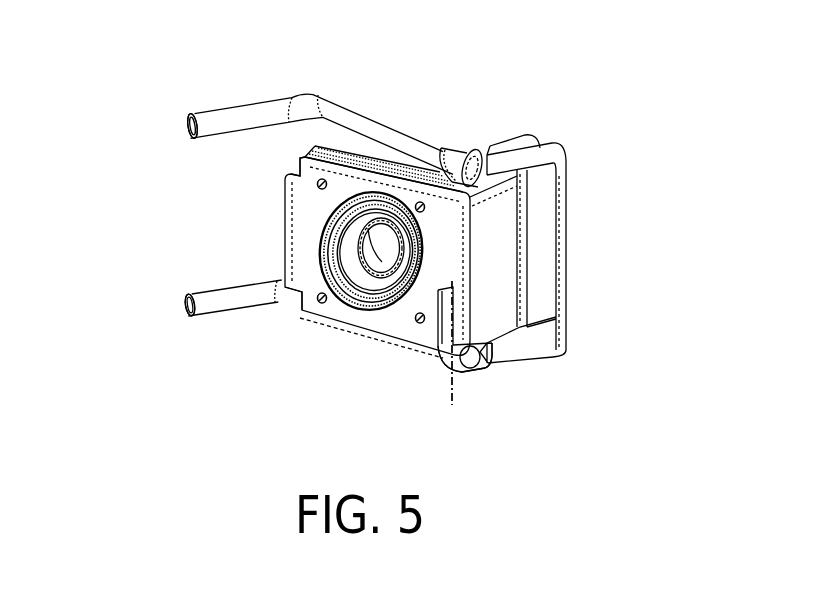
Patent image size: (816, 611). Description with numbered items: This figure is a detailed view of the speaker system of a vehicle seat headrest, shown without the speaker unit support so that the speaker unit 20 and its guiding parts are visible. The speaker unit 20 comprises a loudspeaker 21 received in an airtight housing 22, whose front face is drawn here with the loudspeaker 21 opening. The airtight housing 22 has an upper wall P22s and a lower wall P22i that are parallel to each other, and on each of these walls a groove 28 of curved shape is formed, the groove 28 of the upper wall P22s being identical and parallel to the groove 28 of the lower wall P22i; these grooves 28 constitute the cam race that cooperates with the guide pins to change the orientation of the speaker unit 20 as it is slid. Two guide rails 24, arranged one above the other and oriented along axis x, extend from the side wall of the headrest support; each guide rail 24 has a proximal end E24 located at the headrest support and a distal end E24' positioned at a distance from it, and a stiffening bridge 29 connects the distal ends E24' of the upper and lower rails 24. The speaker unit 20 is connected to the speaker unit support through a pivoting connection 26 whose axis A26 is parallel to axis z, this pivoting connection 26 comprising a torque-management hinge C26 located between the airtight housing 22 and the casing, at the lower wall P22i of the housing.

The speaker unit 20 is at (260, 203).
The loudspeaker 21 is at (362, 293).
The airtight housing 22 is at (401, 322).
The guide rail 24 is at (364, 91).
The proximal end E24 is at (131, 226).
The distal end E24' is at (449, 256).
The upper wall P22s is at (308, 146).
The lower wall P22i is at (307, 326).
The pivoting connection 26 is at (440, 372).
The torque-management hinge C26 is at (462, 358).
The axis of the pivoting connection A26 is at (458, 396).
The groove 28 is at (373, 144).
The stiffening bridge 29 is at (588, 228).